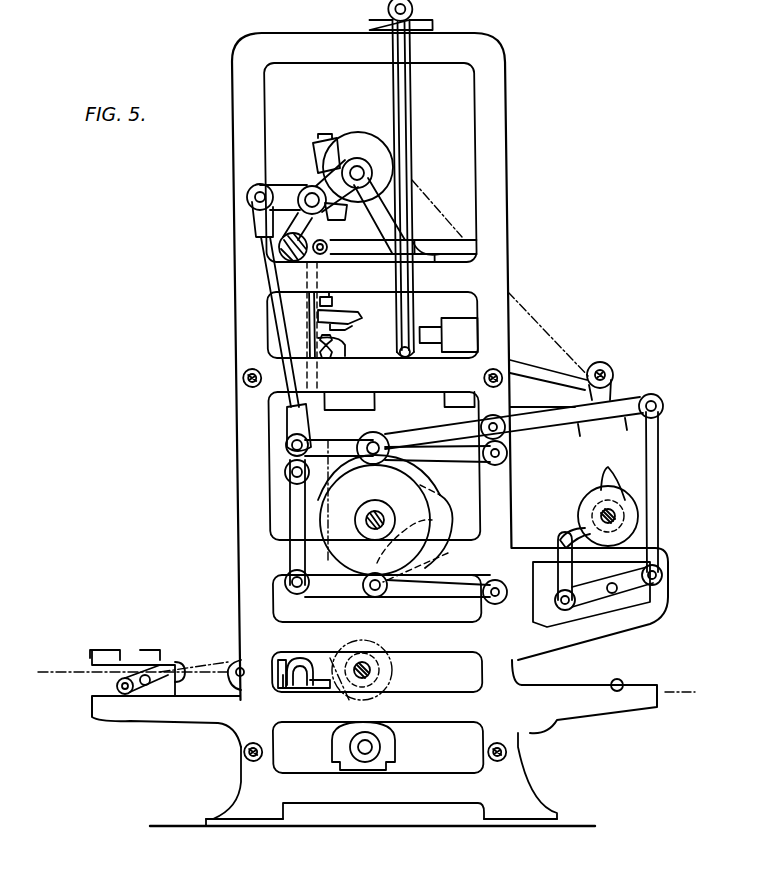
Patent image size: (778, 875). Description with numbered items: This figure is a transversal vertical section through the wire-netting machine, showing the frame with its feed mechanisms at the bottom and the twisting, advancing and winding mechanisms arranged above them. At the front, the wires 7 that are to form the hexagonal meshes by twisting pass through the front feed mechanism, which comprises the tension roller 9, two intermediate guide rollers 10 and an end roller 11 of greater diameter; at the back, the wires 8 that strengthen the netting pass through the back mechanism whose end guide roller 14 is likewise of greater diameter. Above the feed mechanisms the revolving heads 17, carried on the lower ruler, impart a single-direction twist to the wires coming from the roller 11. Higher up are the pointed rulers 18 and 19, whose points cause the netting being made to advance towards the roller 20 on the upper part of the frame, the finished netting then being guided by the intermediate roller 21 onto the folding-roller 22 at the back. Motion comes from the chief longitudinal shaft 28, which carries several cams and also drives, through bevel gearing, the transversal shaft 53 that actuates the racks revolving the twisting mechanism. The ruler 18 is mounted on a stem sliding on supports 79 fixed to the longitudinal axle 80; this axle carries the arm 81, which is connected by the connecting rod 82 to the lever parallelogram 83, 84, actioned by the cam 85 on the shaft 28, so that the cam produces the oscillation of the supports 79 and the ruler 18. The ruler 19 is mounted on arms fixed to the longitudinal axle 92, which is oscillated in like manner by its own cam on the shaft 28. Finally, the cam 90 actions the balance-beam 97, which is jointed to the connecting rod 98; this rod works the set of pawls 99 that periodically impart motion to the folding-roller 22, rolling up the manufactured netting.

The transversal shaft 53 is at (404, 107).
The supports 79 is at (322, 156).
The roller 20 is at (378, 165).
The arm 81 is at (280, 195).
The longitudinal axle 80 is at (310, 193).
The lever parallelogram 83 is at (433, 247).
The ruler 19 is at (320, 301).
The ruler 18 is at (340, 313).
The revolving heads 17 is at (333, 348).
The connecting rod 82 is at (278, 336).
The intermediate roller 21 is at (605, 362).
The balance-beam 97 is at (537, 429).
The chief longitudinal shaft 28 is at (383, 520).
The cam 90 is at (447, 523).
The lever parallelogram 84 is at (292, 498).
The cam 85 is at (330, 531).
The folding-roller 22 is at (630, 500).
The longitudinal axle 92 is at (655, 508).
The set of pawls 99 is at (562, 573).
The wires 7 is at (55, 670).
The tension roller 9 is at (177, 662).
The intermediate guide rollers 10 is at (288, 662).
The end roller 11 is at (387, 664).
The connecting rod 98 is at (318, 708).
The guide roller 14 is at (385, 747).
The wires 8 is at (662, 688).